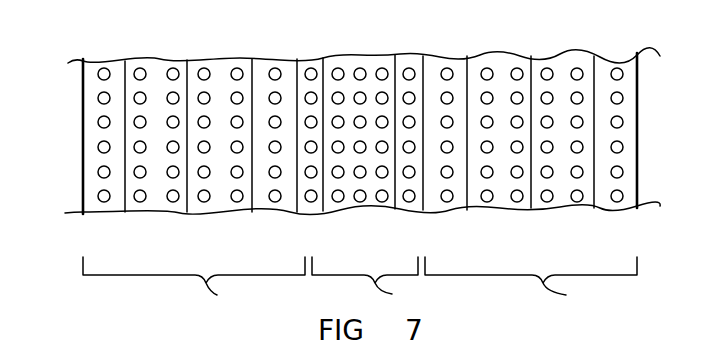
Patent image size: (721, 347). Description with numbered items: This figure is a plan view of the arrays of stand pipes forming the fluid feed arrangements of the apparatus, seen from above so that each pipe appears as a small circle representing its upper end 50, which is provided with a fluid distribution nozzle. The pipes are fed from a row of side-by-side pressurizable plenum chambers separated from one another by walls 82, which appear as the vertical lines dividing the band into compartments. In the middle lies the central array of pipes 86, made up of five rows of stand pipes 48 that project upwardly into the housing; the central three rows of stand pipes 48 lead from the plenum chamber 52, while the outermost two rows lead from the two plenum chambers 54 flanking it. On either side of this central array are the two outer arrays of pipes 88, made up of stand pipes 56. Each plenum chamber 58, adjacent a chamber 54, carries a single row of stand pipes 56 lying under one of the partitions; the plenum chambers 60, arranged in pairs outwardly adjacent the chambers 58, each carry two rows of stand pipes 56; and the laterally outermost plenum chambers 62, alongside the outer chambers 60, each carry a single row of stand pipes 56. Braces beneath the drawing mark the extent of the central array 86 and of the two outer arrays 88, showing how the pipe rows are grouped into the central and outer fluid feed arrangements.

The stand pipes 48 is at (409, 68).
The upper ends 50 is at (274, 68).
The plenum chamber 52 is at (368, 195).
The plenum chambers 54 is at (304, 203).
The stand pipes 56 is at (655, 97).
The plenum chambers 58 is at (259, 200).
The plenum chambers 60 is at (162, 210).
The plenum chambers 62 is at (117, 210).
The walls 82 is at (186, 73).
The central array of pipes 86 is at (366, 282).
The outer arrays of pipes 88 is at (360, 283).